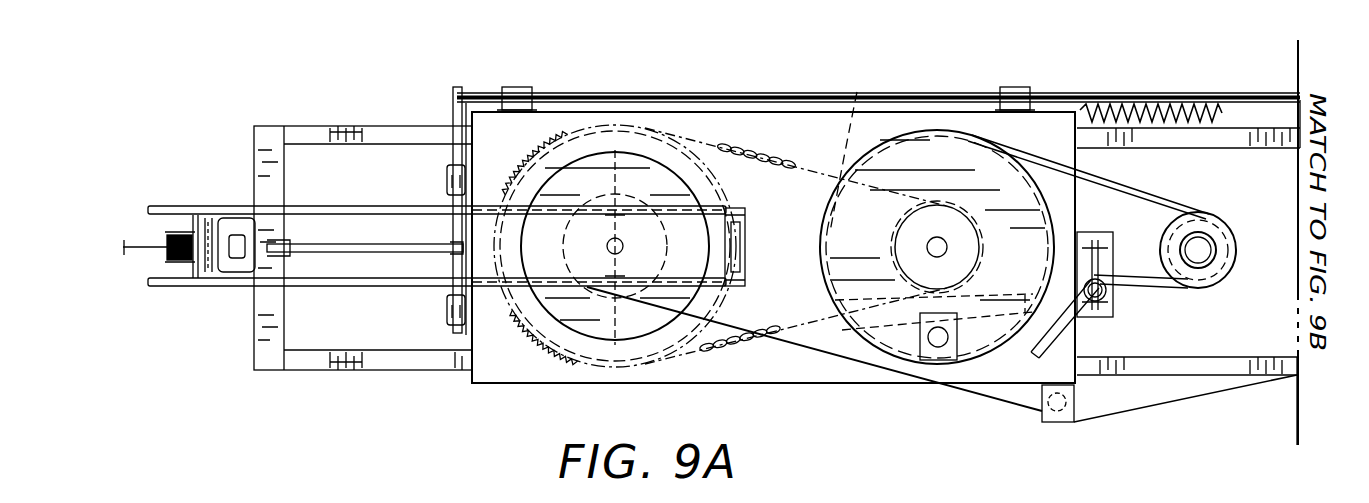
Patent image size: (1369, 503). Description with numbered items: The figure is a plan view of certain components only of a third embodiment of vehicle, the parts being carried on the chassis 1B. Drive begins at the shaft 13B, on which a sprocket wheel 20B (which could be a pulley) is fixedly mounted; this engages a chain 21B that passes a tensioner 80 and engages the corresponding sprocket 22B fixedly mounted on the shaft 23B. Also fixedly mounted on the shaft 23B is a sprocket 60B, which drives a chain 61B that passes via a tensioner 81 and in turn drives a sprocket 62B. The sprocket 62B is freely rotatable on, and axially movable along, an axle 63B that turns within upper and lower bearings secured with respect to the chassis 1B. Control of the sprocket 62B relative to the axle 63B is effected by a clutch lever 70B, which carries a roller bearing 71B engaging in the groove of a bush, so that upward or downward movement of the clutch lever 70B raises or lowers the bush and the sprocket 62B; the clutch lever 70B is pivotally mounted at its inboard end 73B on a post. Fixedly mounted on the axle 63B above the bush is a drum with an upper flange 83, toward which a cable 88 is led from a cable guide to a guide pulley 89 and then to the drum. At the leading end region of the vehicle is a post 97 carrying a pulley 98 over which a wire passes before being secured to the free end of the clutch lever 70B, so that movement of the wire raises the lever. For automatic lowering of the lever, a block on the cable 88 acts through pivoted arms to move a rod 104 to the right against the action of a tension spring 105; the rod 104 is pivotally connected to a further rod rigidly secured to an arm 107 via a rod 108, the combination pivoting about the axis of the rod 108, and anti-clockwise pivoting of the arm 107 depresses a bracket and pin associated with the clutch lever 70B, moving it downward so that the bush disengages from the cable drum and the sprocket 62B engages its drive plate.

The chassis 1B is at (318, 135).
The rod 108 is at (453, 110).
The pulley 98 is at (165, 232).
The post 97 is at (232, 218).
The arm 107 is at (368, 242).
The clutch lever 70B is at (400, 285).
The upper flange 83 is at (568, 168).
The axle 63B is at (613, 213).
The sprocket 62B is at (643, 360).
The roller bearing 71B is at (583, 360).
The inboard end 73B is at (747, 243).
The chain 61B is at (770, 160).
The sprocket 60B is at (857, 92).
The sprocket 22B is at (907, 143).
The shaft 23B is at (946, 240).
The tensioner 81 is at (870, 320).
The chain 21B is at (1123, 183).
The shaft 13B is at (1212, 225).
The sprocket wheel 20B is at (1230, 274).
The tensioner 80 is at (1115, 296).
The guide pulley 89 is at (1050, 420).
The cable 88 is at (1228, 388).
The tension spring 105 is at (1132, 112).
The rod 104 is at (1267, 100).